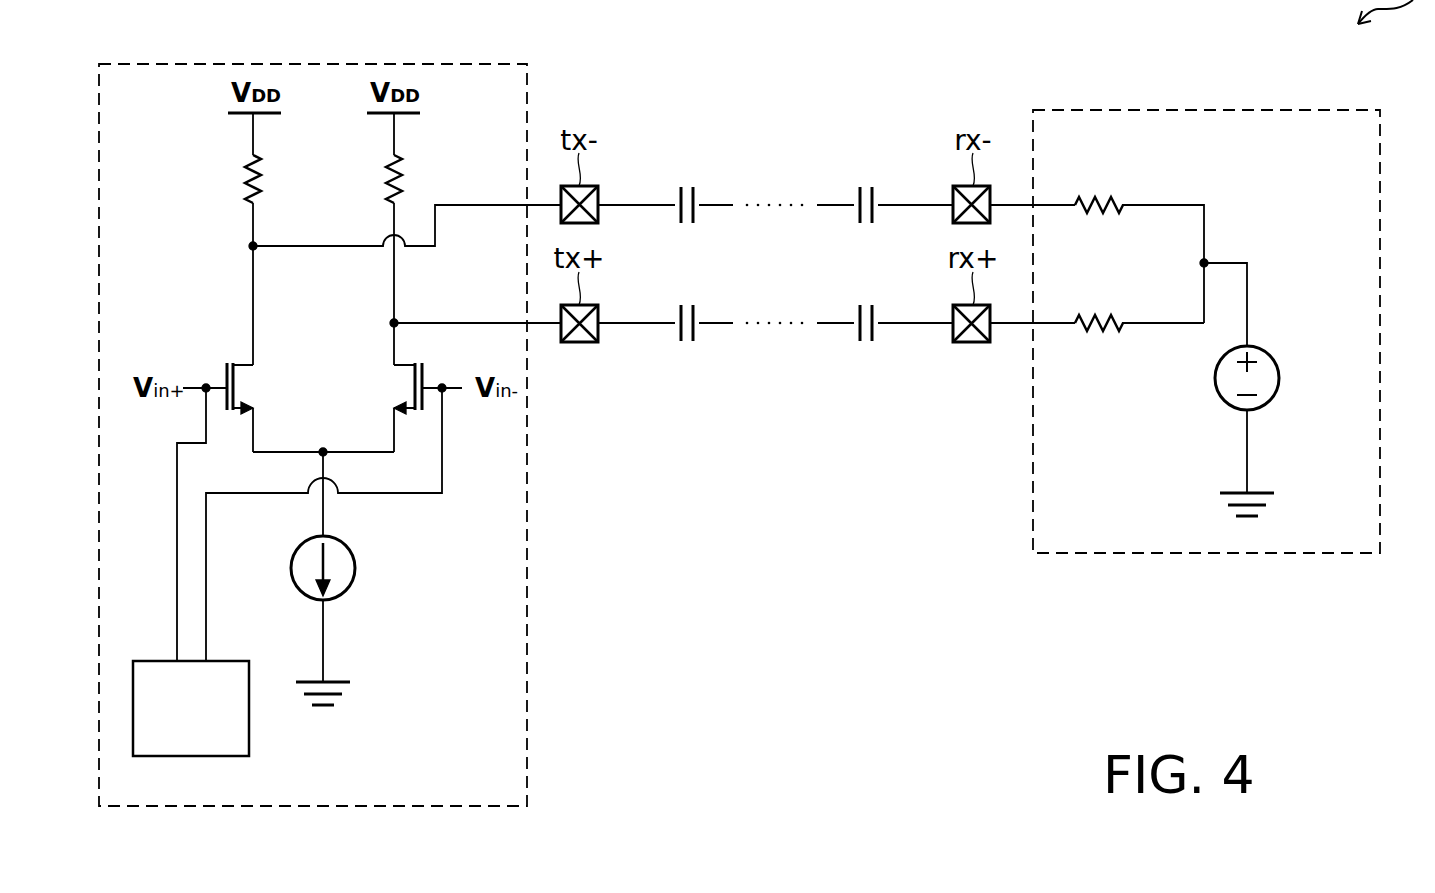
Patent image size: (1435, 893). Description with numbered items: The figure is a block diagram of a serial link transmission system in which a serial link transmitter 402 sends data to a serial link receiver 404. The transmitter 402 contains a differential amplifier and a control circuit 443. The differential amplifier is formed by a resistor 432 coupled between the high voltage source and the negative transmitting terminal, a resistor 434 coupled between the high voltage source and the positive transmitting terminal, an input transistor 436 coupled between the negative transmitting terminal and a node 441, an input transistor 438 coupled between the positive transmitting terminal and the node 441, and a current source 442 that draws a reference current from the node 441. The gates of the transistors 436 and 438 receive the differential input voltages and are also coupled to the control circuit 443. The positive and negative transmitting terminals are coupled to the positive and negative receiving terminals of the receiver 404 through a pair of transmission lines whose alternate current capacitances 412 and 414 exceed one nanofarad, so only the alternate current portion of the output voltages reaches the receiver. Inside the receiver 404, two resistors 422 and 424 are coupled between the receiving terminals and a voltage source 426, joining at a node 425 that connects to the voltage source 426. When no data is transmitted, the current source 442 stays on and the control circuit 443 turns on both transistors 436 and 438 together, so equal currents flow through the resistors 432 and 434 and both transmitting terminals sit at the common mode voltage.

The serial link transmitter 402 is at (315, 62).
The serial link receiver 404 is at (1215, 110).
The AC capacitance 412 is at (686, 186).
The AC capacitance 414 is at (686, 305).
The resistor 422 is at (1097, 194).
The resistor 424 is at (1097, 312).
The common node 425 is at (1207, 261).
The voltage source 426 is at (1266, 352).
The resistor 432 is at (246, 180).
The resistor 434 is at (387, 180).
The input transistor 436 is at (223, 366).
The input transistor 438 is at (430, 366).
The node 441 is at (323, 446).
The current source 442 is at (346, 543).
The control circuit 443 is at (249, 735).